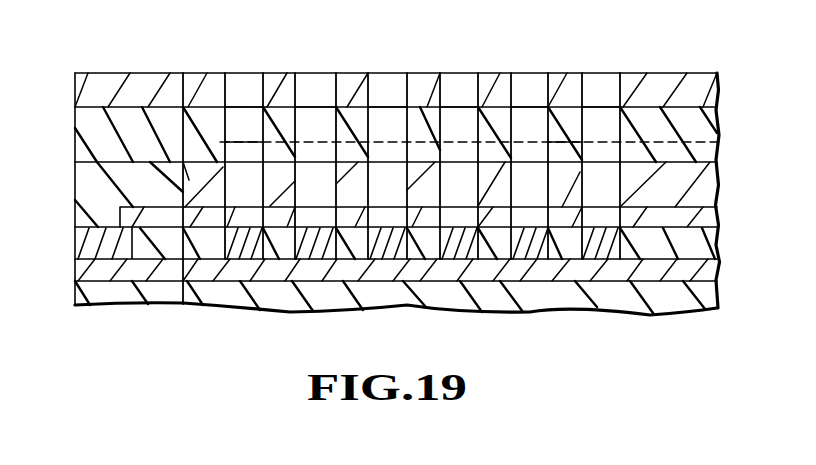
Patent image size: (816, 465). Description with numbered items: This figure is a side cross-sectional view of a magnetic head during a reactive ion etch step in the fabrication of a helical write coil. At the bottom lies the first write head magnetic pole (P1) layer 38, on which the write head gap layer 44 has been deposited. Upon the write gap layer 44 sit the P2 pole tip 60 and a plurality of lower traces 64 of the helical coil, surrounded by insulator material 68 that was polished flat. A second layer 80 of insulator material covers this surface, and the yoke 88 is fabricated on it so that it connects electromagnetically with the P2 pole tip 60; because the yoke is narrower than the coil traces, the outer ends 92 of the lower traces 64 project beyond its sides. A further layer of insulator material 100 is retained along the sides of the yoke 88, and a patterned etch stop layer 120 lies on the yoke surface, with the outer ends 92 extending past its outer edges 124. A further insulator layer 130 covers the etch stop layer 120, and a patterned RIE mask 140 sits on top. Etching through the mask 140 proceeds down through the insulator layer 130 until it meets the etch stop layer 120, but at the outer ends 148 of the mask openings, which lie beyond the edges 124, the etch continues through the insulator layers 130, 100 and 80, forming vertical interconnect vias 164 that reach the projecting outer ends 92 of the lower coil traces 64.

The first write head magnetic pole (P1) layer 38 is at (72, 295).
The write head gap layer 44 is at (78, 273).
The P2 pole tip 60 is at (80, 248).
The lower traces of the helical coil 64 is at (375, 250).
The insulator material 68 is at (713, 247).
The second layer of insulator material 80 is at (708, 217).
The yoke 88 is at (83, 178).
The outer ends of the lower helical coil traces 92 is at (233, 244).
The further layer of insulator material 100 is at (710, 187).
The patterned etch stop layer 120 is at (708, 153).
The outer edges of the etch stop layer 124 is at (241, 150).
The further layer of insulator material 130 is at (80, 130).
The patterned RIE mask 140 is at (80, 90).
The outer ends of the openings for the upper helical coil traces 148 is at (532, 33).
The vertical interconnect vias 164 is at (385, 126).